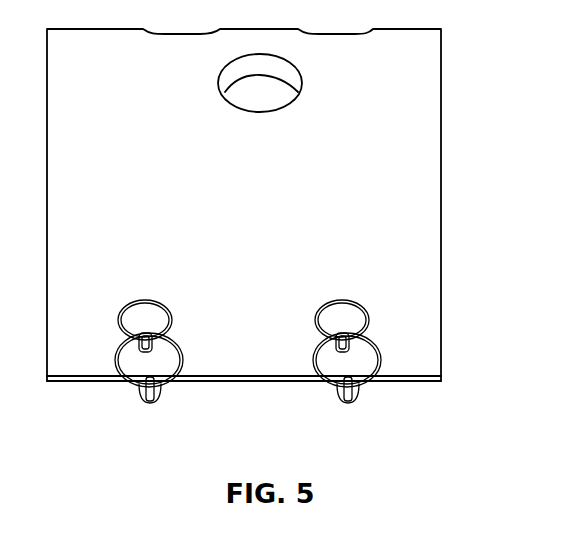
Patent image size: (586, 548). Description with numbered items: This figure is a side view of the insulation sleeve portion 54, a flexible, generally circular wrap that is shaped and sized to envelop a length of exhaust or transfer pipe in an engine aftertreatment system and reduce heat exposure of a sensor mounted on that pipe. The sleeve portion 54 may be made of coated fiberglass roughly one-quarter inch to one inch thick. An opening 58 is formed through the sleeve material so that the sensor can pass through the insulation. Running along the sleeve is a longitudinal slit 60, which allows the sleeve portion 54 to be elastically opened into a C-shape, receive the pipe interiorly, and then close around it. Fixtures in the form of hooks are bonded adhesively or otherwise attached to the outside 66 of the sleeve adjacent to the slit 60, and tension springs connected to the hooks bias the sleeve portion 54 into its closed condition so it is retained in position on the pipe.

The sleeve portion 54 is at (441, 144).
The opening 58 is at (254, 95).
The longitudinal opening or slit 60 is at (421, 382).
The outside of the sleeve 66 is at (395, 237).